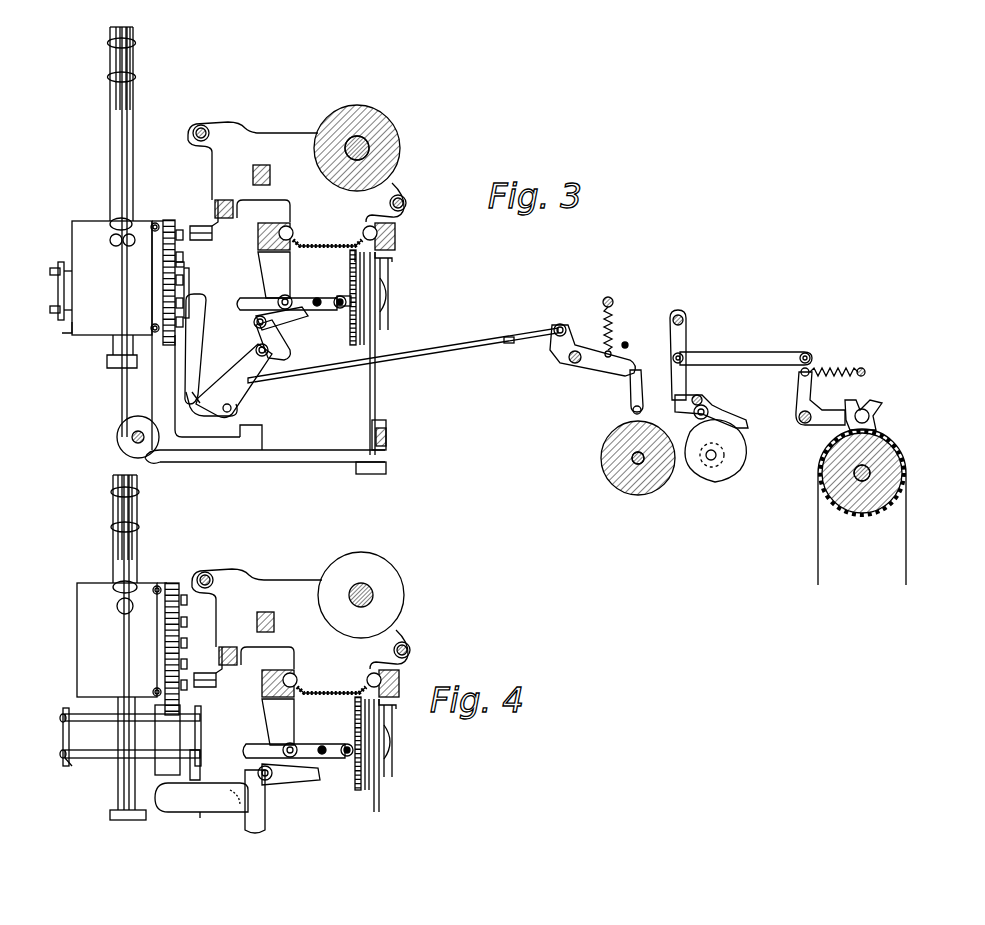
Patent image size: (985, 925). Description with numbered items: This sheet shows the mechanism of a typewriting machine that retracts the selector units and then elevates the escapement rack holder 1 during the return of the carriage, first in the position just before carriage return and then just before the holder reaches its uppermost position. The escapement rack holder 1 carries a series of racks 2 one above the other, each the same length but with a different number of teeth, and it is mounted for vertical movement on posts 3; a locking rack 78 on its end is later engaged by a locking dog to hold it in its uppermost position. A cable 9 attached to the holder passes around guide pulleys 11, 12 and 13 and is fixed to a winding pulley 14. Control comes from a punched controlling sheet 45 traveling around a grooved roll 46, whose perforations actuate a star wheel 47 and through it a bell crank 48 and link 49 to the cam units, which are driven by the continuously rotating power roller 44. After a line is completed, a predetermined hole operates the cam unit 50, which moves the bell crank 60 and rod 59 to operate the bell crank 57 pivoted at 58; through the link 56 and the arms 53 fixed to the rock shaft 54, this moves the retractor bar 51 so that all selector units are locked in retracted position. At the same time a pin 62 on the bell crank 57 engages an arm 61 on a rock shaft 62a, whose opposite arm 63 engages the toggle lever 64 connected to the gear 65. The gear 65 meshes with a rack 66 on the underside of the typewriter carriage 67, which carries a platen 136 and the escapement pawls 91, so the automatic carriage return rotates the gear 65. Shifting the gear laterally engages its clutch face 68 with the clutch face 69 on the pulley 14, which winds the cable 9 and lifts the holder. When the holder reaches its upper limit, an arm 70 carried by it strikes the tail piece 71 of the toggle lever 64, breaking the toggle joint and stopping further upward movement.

In FIG. 3, the escapement rack holder 1 is at (80, 230).
In FIG. 4, the escapement rack holder 1 is at (84, 590).
In FIG. 3, the racks 2 is at (180, 232).
In FIG. 4, the racks 2 is at (188, 600).
In FIG. 3, the posts 3 is at (108, 355).
In FIG. 4, the posts 3 is at (118, 798).
In FIG. 3, the cable 9 is at (376, 389).
In FIG. 4, the cable 9 is at (380, 802).
In FIG. 3, the guide pulley 11 is at (128, 437).
In FIG. 3, the guide pulley 12 is at (378, 458).
In FIG. 3, the guide pulley 13 is at (368, 426).
In FIG. 3, the winding pulley 14 is at (386, 330).
In FIG. 4, the winding pulley 14 is at (390, 778).
In FIG. 3, the power roller 44 is at (653, 488).
In FIG. 3, the punched controlling sheet 45 is at (908, 538).
In FIG. 3, the grooved roll 46 is at (872, 510).
In FIG. 3, the star wheel 47 is at (870, 406).
In FIG. 3, the bell crank 48 is at (798, 388).
In FIG. 3, the link 49 is at (736, 352).
In FIG. 3, the cam unit 50 is at (710, 482).
In FIG. 4, the retractor bar 51 is at (85, 712).
In FIG. 3, the arms 53 is at (57, 296).
In FIG. 4, the arms 53 is at (70, 738).
In FIG. 3, the rock shaft 54 is at (70, 333).
In FIG. 4, the rock shaft 54 is at (90, 760).
In FIG. 3, the link 56 is at (199, 334).
In FIG. 4, the link 56 is at (200, 770).
In FIG. 3, the bell crank 57 is at (203, 400).
In FIG. 3, the pivot 58 is at (215, 417).
In FIG. 3, the rod 59 is at (452, 348).
In FIG. 3, the bell crank 60 is at (596, 365).
In FIG. 3, the arm 61 is at (290, 353).
In FIG. 3, the pin 62 is at (262, 362).
In FIG. 3, the rock shaft 62a is at (256, 350).
In FIG. 3, the arm 63 is at (300, 317).
In FIG. 4, the arm 63 is at (305, 780).
In FIG. 3, the toggle lever 64 is at (305, 298).
In FIG. 4, the toggle lever 64 is at (308, 745).
In FIG. 3, the gear 65 is at (353, 348).
In FIG. 4, the gear 65 is at (356, 775).
In FIG. 3, the rack 66 is at (356, 245).
In FIG. 4, the rack 66 is at (360, 692).
In FIG. 3, the typewriter carriage 67 is at (260, 140).
In FIG. 4, the typewriter carriage 67 is at (288, 594).
In FIG. 3, the clutch face 68 is at (352, 294).
In FIG. 3, the clutch face 69 is at (365, 276).
In FIG. 3, the arm 70 is at (263, 436).
In FIG. 4, the arm 70 is at (242, 786).
In FIG. 3, the tail piece 71 is at (258, 300).
In FIG. 4, the tail piece 71 is at (260, 746).
In FIG. 3, the locking rack 78 is at (163, 279).
In FIG. 3, the escapement pawls 91 is at (213, 240).
In FIG. 4, the escapement pawls 91 is at (217, 687).
In FIG. 3, the platen 136 is at (395, 135).
In FIG. 4, the platen 136 is at (382, 572).